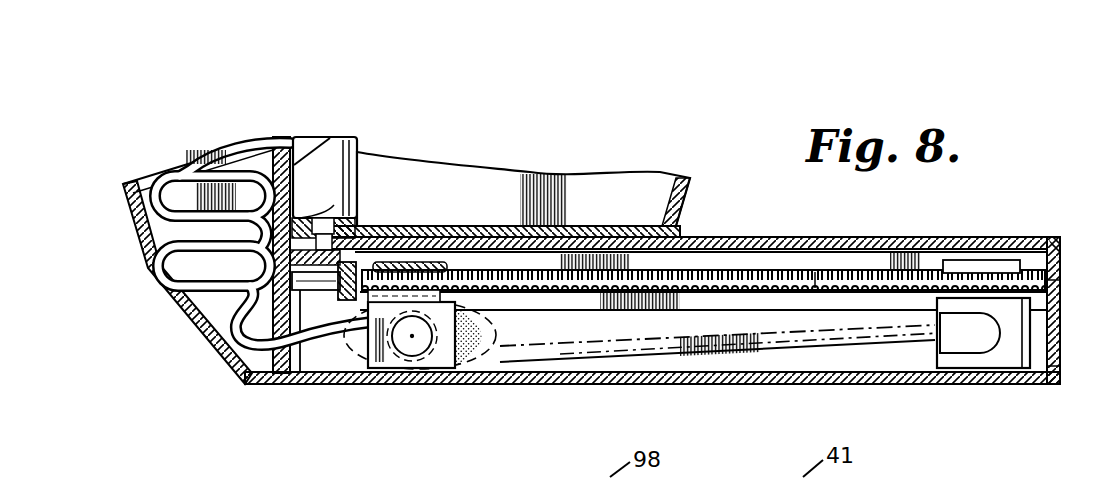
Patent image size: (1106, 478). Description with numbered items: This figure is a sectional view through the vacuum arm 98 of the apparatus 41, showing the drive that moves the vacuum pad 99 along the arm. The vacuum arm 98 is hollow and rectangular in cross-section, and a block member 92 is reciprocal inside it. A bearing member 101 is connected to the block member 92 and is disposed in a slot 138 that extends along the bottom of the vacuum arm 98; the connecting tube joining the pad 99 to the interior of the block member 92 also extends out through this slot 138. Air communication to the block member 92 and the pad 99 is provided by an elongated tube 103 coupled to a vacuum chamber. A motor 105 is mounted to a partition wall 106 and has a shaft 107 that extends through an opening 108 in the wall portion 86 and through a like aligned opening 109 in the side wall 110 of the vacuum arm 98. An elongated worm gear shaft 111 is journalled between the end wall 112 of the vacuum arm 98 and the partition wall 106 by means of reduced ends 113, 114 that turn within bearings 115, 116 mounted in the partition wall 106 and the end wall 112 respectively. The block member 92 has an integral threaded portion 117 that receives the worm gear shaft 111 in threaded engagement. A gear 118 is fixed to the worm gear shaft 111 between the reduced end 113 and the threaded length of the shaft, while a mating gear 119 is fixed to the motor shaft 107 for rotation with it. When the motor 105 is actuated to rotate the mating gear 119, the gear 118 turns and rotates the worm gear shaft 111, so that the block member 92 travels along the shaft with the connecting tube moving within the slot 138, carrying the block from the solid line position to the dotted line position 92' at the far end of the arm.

The sprayer device 41 is at (650, 158).
The wall portion 86 is at (595, 222).
The block member 92 is at (420, 359).
The dotted line position of block member 92' is at (972, 363).
The vacuum arm 98 is at (934, 230).
The vacuum pad 99 is at (532, 377).
The bearing member 101 is at (456, 386).
The elongated tube 103 is at (228, 373).
The motor 105 is at (357, 156).
The partition wall 106 is at (331, 138).
The shaft 107 is at (330, 215).
The opening 108 is at (212, 158).
The opening 109 is at (237, 292).
The side wall 110 is at (737, 248).
The worm gear shaft 111 is at (811, 284).
The end wall 112 is at (1062, 367).
The reduced end 113 is at (248, 312).
The reduced end 114 is at (1061, 280).
The bearing 115 is at (253, 384).
The bearing 116 is at (1040, 246).
The threaded portion 117 is at (450, 266).
The gear 118 is at (333, 345).
The mating gear 119 is at (395, 242).
The slot 138 is at (824, 355).